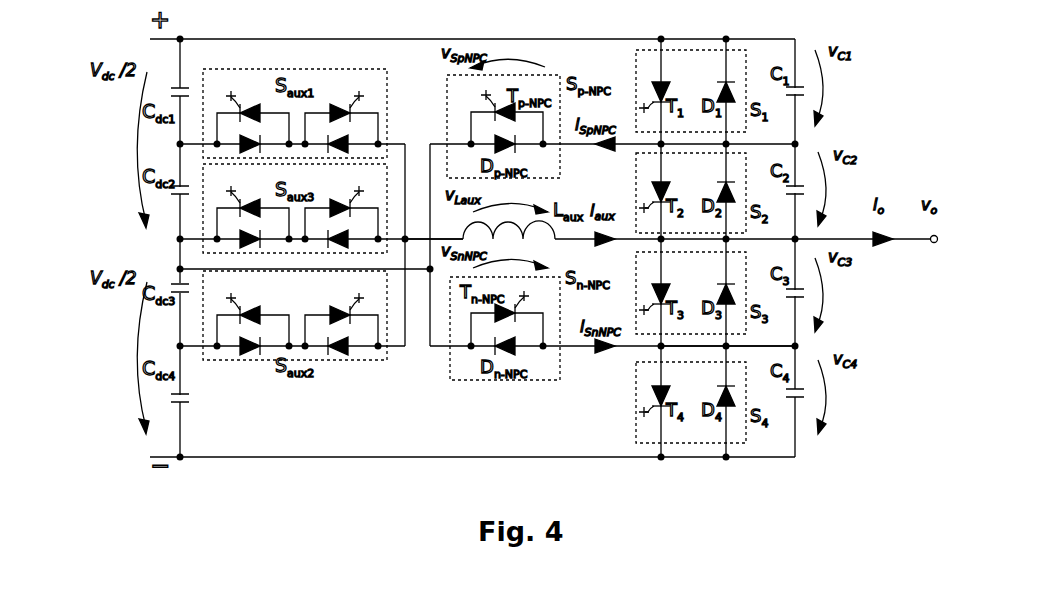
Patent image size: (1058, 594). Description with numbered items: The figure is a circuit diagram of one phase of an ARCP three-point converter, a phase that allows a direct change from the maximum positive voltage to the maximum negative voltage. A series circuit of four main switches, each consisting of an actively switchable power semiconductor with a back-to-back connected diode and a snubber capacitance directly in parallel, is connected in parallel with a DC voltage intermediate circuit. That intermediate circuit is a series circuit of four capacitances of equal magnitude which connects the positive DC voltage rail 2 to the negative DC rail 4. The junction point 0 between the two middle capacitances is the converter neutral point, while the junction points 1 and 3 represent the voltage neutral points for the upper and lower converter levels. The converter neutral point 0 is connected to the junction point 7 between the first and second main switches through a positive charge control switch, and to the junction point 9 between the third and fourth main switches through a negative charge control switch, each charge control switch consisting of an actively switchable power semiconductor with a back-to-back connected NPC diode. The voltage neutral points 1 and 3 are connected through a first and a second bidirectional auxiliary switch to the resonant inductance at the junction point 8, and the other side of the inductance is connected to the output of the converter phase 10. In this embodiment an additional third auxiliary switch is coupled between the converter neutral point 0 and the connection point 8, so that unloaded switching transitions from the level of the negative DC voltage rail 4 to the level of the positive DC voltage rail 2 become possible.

The positive DC voltage rail 2 is at (480, 33).
The negative DC rail 4 is at (480, 480).
The junction point 1 is at (173, 141).
The junction point 0 is at (172, 247).
The junction point 3 is at (173, 343).
The junction point 7 is at (786, 119).
The junction point 9 is at (786, 321).
The junction point 8 is at (450, 234).
The output of the converter phase 10 is at (918, 275).